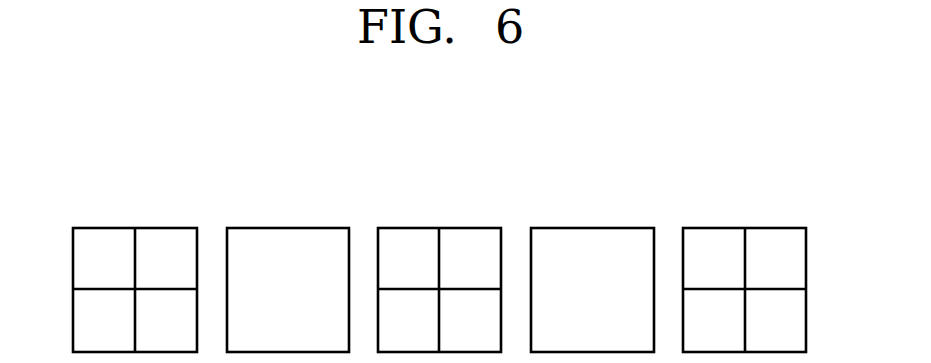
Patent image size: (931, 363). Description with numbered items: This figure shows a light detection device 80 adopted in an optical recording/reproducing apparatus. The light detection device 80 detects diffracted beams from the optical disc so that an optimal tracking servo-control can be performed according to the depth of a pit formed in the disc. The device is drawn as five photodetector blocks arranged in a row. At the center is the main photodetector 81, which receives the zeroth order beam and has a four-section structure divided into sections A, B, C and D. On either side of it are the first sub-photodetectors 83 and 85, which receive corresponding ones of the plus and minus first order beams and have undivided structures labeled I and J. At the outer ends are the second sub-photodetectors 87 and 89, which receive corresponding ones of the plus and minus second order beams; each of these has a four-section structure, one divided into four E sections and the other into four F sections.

The light detection device 80 is at (206, 147).
The main photodetector 81 is at (455, 228).
The first sub-photodetector 83 is at (305, 228).
The first sub-photodetector 85 is at (609, 228).
The second sub-photodetector 87 is at (150, 228).
The second sub-photodetector 89 is at (759, 228).